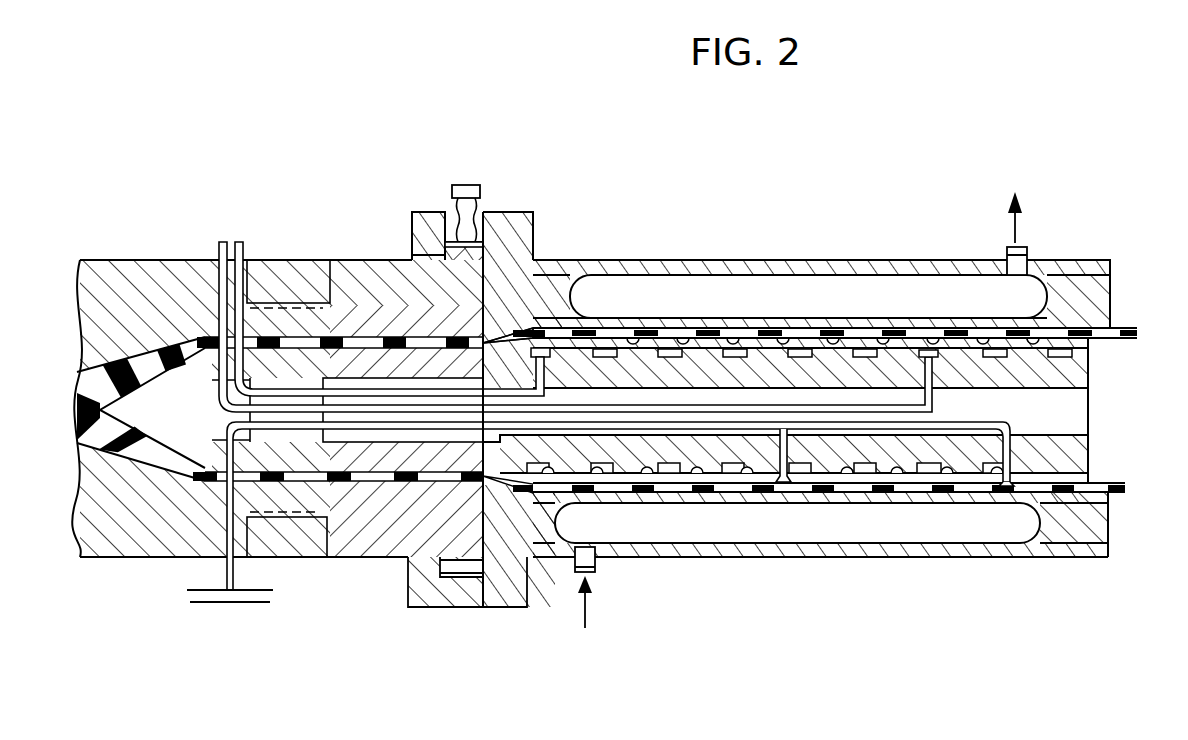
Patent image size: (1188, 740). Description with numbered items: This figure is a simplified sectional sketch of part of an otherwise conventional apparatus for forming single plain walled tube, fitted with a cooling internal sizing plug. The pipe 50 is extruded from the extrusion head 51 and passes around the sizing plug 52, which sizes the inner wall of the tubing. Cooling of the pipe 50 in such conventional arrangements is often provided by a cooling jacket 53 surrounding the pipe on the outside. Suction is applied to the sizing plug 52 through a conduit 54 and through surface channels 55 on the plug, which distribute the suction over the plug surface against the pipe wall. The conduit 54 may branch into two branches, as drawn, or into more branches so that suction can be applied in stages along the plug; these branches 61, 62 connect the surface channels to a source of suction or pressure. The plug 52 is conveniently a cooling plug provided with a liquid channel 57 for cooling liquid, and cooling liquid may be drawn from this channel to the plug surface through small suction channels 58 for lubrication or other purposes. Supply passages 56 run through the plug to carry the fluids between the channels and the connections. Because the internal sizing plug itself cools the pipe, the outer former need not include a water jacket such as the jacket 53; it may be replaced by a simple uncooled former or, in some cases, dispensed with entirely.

The pipe 50 is at (572, 343).
The extrusion head 51 is at (120, 260).
The sizing plug 52 is at (1040, 373).
The cooling jacket 53 is at (748, 518).
The conduit 54 is at (1078, 456).
The surface channels 55 is at (1045, 492).
The fluid supply tubes 56 is at (935, 404).
The liquid channel 57 is at (933, 473).
The small suction channels 58 is at (533, 332).
The branch of conduit 61 is at (212, 607).
The branch of conduit 62 is at (257, 608).